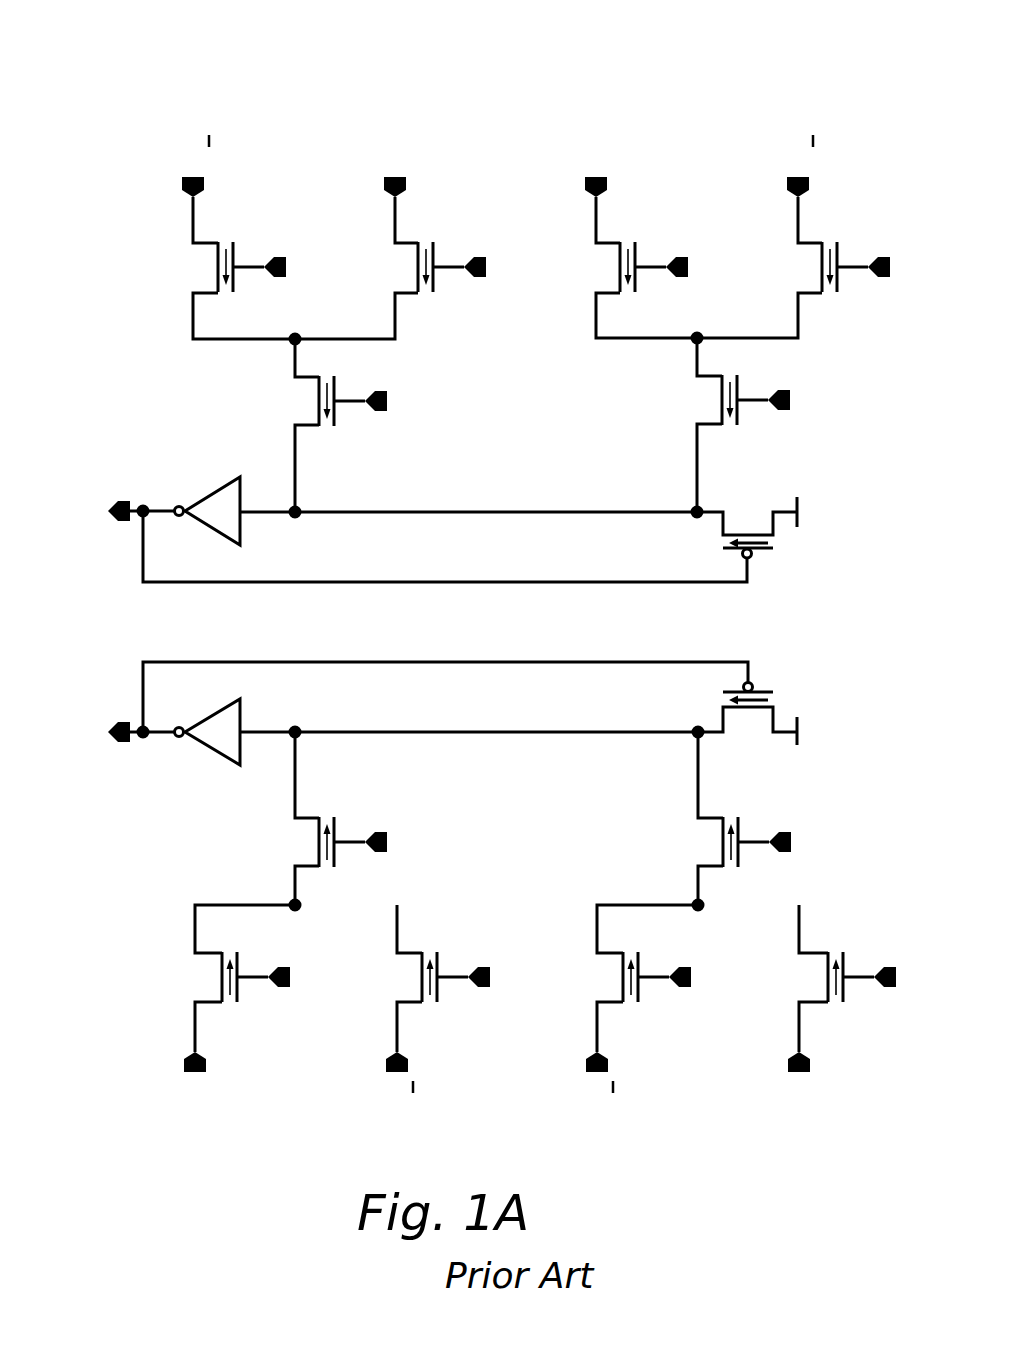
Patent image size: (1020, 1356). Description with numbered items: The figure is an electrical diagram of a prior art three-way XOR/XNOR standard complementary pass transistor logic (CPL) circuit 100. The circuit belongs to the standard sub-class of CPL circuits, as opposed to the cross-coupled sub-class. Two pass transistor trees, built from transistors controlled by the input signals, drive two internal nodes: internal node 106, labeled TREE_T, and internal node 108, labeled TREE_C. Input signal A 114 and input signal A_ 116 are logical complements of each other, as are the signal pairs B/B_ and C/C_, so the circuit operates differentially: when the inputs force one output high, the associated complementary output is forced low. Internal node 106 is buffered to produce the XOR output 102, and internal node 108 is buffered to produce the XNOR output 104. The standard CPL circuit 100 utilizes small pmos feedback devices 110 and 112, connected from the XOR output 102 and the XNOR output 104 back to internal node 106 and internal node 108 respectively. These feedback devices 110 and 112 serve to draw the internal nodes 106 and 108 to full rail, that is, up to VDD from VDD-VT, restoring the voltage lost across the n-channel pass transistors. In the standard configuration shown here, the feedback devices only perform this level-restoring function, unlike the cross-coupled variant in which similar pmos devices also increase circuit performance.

The standard CPL circuit 100 is at (746, 53).
The XOR output 102 is at (107, 530).
The XNOR output 104 is at (107, 752).
The internal node 106 is at (580, 514).
The internal node 108 is at (584, 734).
The pmos feedback device 110 is at (757, 507).
The pmos feedback device 112 is at (761, 736).
The input signal A 114 is at (829, 400).
The input signal A_ 116 is at (434, 403).